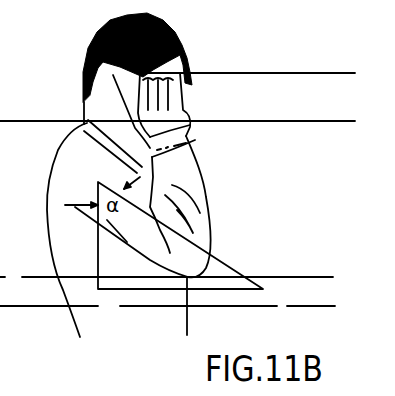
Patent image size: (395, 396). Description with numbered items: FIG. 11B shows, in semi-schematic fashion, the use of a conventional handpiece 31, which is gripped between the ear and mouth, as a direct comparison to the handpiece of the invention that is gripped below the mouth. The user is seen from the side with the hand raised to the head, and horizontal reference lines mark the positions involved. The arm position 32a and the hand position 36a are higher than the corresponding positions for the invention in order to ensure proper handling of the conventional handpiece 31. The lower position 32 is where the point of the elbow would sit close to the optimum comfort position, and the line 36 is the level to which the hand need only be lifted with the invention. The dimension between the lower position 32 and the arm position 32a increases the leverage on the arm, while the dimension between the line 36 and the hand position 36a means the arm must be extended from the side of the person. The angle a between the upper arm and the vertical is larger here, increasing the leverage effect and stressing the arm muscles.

The conventional handpiece 31 is at (83, 90).
The hand position 36a is at (237, 73).
The line to which the hand is lifted 36 is at (222, 121).
The arm position 32a is at (275, 276).
The lower position 32 is at (303, 307).